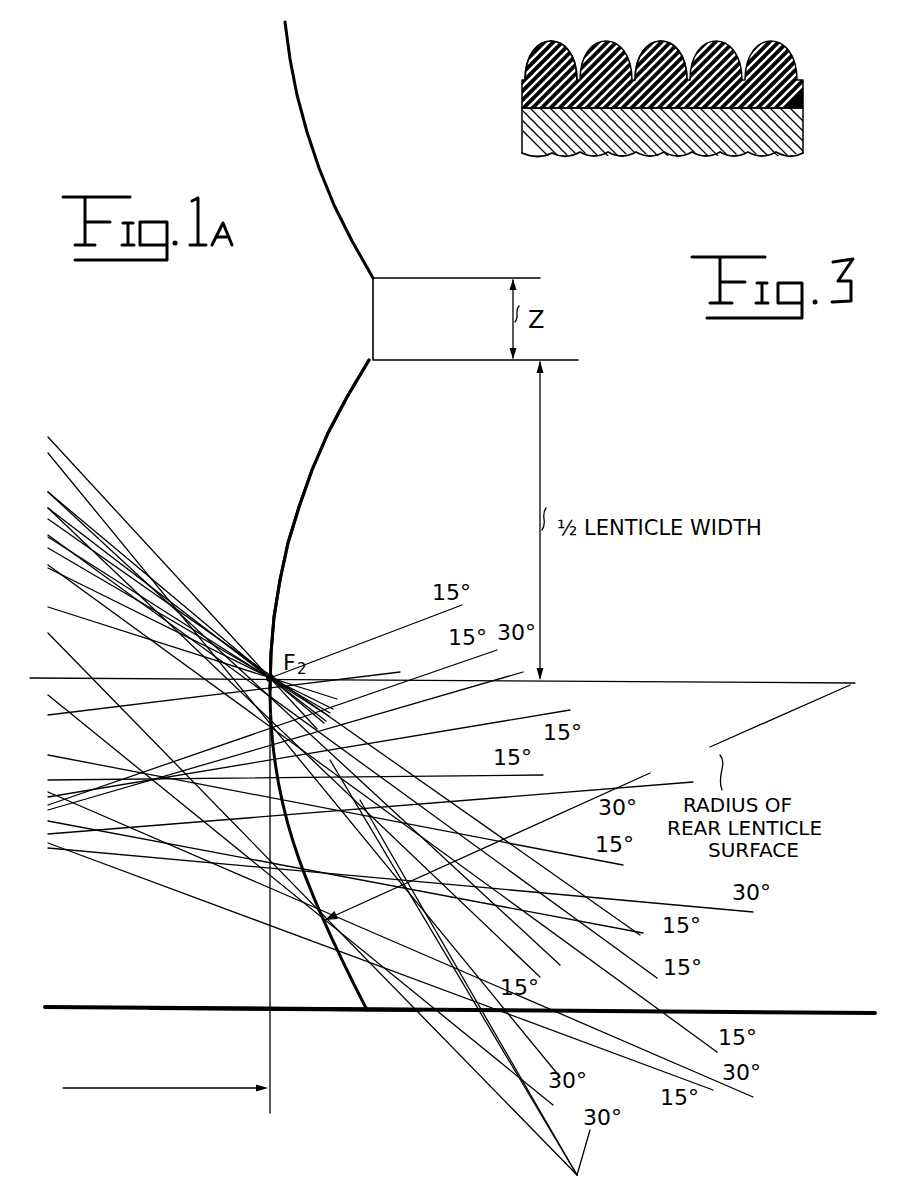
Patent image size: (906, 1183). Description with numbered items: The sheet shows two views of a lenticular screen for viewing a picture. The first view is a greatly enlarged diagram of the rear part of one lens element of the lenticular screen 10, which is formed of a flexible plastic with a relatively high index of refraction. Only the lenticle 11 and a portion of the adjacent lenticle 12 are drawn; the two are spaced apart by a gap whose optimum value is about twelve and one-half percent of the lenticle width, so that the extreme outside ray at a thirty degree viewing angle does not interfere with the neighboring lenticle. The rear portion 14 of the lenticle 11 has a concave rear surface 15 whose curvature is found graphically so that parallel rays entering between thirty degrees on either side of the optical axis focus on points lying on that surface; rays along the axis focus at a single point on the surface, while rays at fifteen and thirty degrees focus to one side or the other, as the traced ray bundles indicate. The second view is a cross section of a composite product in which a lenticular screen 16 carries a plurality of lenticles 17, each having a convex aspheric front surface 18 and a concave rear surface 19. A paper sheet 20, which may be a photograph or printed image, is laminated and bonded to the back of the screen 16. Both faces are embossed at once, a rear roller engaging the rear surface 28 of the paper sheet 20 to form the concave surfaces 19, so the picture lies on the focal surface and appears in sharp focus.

In FIG. 1A, the lenticular screen 10 is at (125, 1009).
In FIG. 1A, the lenticle 11 is at (278, 473).
In FIG. 1A, the adjacent lenticle 12 is at (272, 168).
In FIG. 1A, the rear portion 14 is at (226, 1011).
In FIG. 1A, the concave rear surface 15 is at (303, 520).
In FIG. 3, the lenticular screen 16 is at (522, 100).
In FIG. 3, the lenticle 17 is at (666, 50).
In FIG. 3, the convex front surface 18 is at (588, 72).
In FIG. 3, the concave rear surface 19 is at (522, 117).
In FIG. 3, the paper sheet 20 is at (522, 137).
In FIG. 3, the rear surface 28 is at (553, 156).